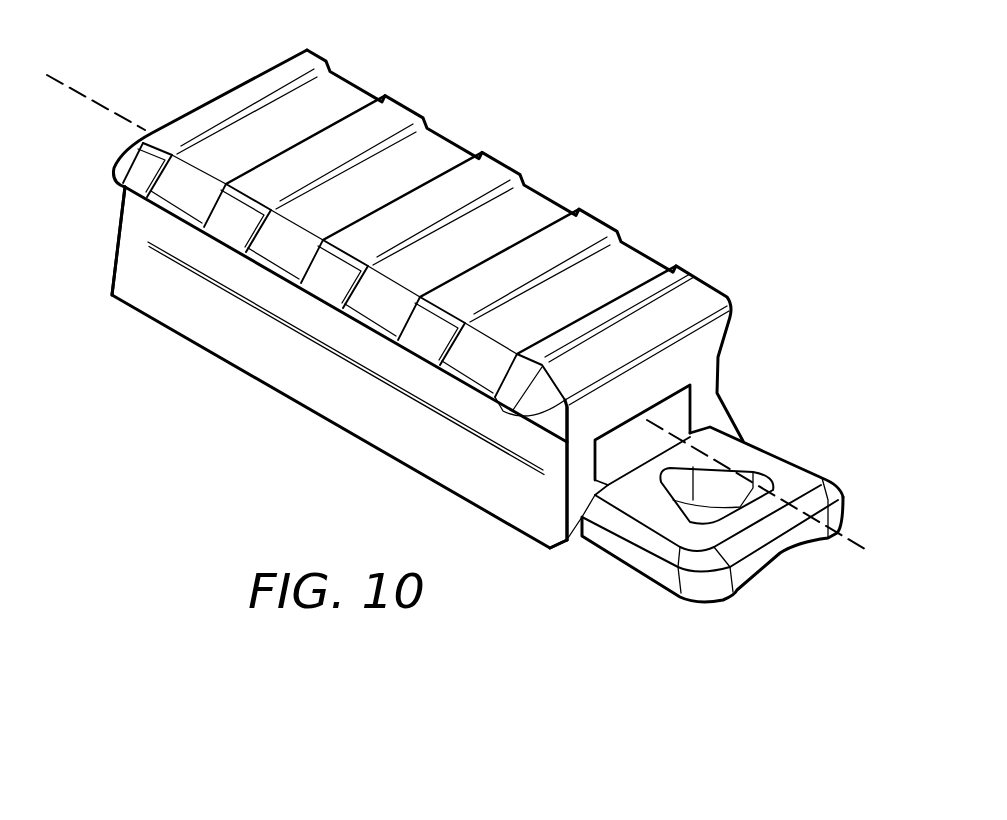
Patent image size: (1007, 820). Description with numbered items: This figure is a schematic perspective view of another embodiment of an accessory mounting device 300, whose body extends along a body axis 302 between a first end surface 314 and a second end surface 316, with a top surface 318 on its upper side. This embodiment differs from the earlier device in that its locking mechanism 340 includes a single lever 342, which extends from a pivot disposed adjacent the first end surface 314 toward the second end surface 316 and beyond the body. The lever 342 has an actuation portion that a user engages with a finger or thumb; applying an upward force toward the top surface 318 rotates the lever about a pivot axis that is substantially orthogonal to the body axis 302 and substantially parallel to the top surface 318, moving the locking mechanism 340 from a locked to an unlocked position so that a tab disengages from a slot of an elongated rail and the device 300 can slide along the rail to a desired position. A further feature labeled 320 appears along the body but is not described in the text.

The accessory mounting device 300 is at (595, 133).
The body axis 302 is at (85, 97).
The first end surface 314 is at (112, 275).
The second end surface 316 is at (568, 538).
The top surface 318 is at (419, 70).
The groove 320 is at (260, 383).
The locking mechanism 340 is at (789, 606).
The lever 342 is at (801, 424).